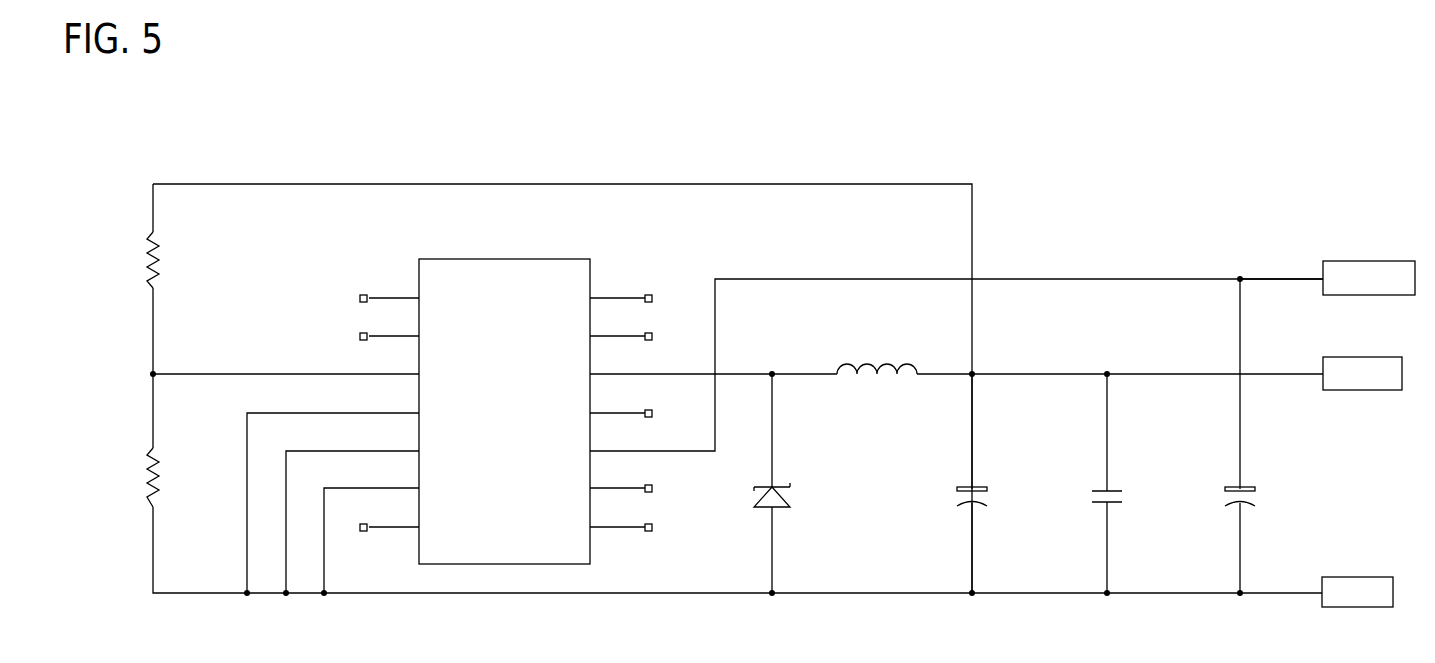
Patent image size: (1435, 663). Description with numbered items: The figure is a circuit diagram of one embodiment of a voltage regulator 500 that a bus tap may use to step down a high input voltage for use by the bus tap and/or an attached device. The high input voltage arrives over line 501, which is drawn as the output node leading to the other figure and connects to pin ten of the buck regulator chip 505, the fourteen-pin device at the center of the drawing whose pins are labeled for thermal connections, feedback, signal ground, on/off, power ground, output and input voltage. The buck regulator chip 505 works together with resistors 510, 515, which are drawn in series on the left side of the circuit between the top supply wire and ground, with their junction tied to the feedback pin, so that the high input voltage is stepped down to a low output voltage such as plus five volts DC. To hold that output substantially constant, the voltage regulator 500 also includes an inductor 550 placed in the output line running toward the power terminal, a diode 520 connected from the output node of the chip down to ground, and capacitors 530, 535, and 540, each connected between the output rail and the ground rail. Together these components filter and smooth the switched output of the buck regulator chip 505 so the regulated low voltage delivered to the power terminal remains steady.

The voltage regulator 500 is at (1048, 158).
The line 501 is at (1270, 278).
The buck regulator chip 505 is at (512, 258).
The resistor 510 is at (160, 262).
The resistor 515 is at (160, 480).
The diode 520 is at (792, 495).
The capacitor 530 is at (985, 488).
The capacitor 535 is at (1253, 490).
The capacitor 540 is at (1122, 490).
The inductor 550 is at (870, 363).